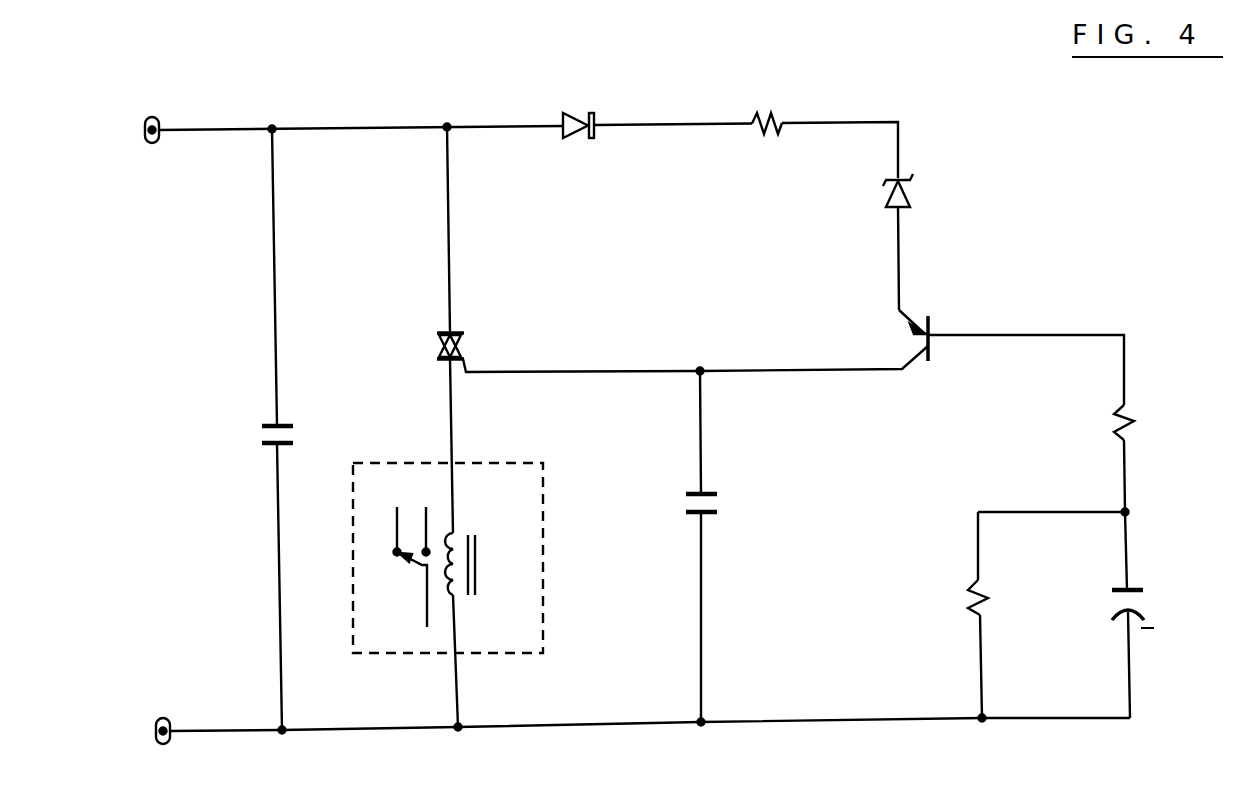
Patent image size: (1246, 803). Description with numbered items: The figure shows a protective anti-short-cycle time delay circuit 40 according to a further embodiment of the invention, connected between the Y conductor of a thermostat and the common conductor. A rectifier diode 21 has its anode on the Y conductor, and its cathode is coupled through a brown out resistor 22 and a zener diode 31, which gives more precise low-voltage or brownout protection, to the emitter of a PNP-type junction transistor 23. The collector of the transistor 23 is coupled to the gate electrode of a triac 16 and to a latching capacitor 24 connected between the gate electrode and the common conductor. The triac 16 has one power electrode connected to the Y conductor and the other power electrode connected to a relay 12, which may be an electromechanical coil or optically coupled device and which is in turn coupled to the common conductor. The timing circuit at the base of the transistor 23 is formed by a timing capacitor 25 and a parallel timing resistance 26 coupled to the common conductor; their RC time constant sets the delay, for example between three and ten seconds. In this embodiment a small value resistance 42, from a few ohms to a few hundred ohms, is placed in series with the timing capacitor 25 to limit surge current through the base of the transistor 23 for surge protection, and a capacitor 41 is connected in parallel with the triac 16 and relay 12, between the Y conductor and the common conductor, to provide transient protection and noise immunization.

The circuit 40 is at (1165, 115).
The relay 12 is at (421, 460).
The triac 16 is at (470, 347).
The rectifier diode 21 is at (598, 111).
The brown out resistor 22 is at (784, 110).
The PNP-type junction transistor 23 is at (932, 328).
The latching capacitor 24 is at (722, 508).
The timing capacitor 25 is at (1146, 596).
The timing resistance 26 is at (990, 598).
The zener diode 31 is at (913, 198).
The capacitor 41 is at (296, 439).
The resistance 42 is at (1136, 424).